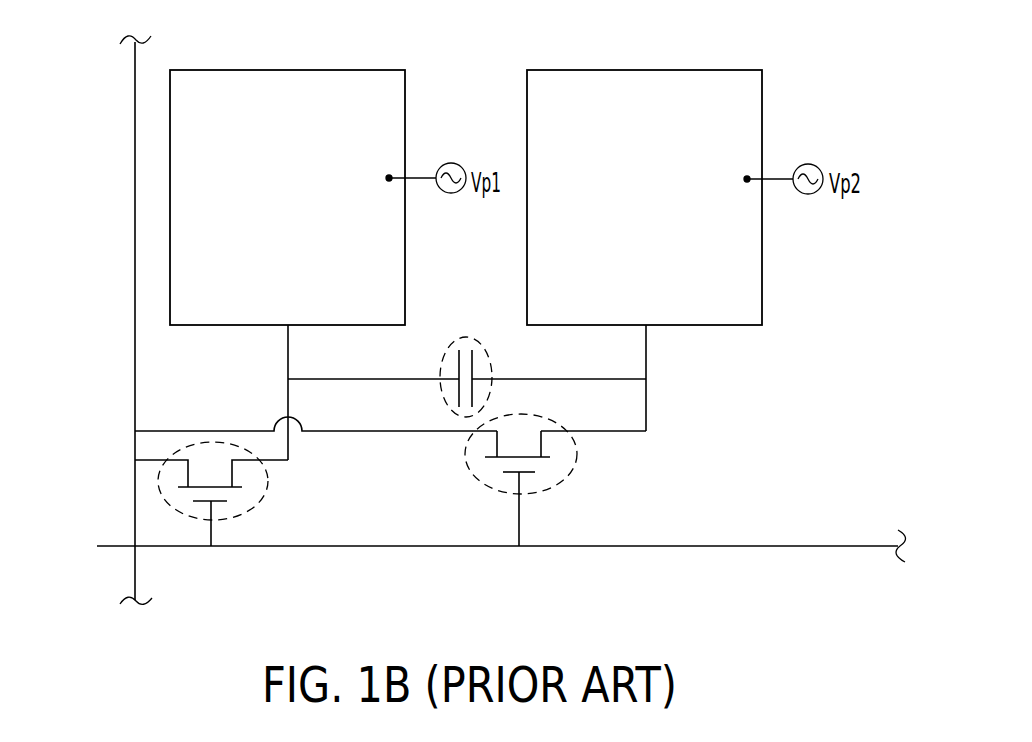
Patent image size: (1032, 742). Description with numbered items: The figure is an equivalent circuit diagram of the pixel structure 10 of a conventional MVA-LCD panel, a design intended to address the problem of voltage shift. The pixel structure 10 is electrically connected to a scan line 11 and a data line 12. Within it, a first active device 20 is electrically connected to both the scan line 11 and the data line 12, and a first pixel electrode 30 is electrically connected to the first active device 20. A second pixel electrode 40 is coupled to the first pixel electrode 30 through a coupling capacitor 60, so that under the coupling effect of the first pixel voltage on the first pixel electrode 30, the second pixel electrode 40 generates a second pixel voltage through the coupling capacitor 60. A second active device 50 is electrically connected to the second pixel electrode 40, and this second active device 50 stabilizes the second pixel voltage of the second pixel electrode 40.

The pixel structure 10 is at (926, 664).
The scan line 11 is at (786, 546).
The data line 12 is at (135, 113).
The first active device 20 is at (237, 520).
The first pixel electrode 30 is at (287, 197).
The second pixel electrode 40 is at (644, 197).
The second active device 50 is at (537, 480).
The coupling capacitor 60 is at (466, 337).